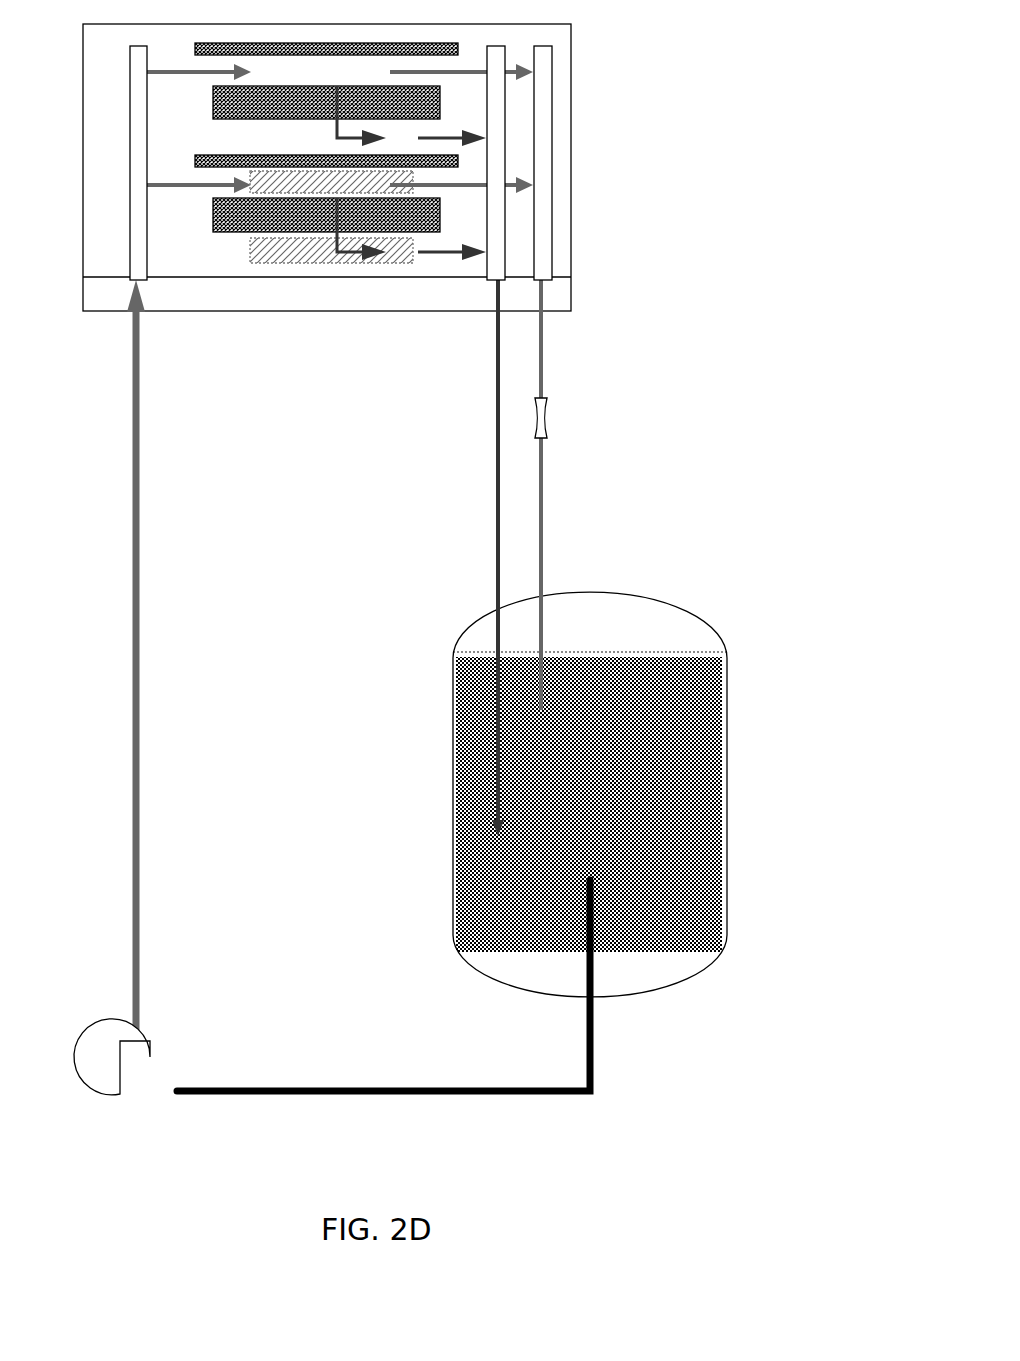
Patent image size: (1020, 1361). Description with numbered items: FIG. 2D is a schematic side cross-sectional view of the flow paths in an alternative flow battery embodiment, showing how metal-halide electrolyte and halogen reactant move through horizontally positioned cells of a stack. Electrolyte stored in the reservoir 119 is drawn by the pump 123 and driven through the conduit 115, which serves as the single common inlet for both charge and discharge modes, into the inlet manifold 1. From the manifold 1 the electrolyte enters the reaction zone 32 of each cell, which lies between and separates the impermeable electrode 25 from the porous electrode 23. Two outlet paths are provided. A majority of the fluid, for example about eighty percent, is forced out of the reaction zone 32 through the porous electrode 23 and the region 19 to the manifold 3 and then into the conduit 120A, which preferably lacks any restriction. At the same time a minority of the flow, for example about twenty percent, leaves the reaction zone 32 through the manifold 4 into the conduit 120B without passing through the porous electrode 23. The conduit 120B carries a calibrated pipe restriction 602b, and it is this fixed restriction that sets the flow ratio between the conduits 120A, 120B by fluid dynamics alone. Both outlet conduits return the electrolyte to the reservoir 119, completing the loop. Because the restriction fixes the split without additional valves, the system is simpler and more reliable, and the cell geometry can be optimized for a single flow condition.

The inlet manifold 1 is at (130, 139).
The manifold 3 is at (498, 218).
The manifold 4 is at (543, 179).
The region 19 is at (394, 174).
The porous electrode 23 is at (407, 112).
The impermeable electrode 25 is at (458, 53).
The reaction zone 32 is at (340, 159).
The conduit 115 is at (139, 643).
The reservoir 119 is at (727, 743).
The conduit 120A is at (498, 332).
The conduit 120B is at (545, 346).
The pump 123 is at (150, 1057).
The calibrated pipe restriction 602b is at (548, 418).